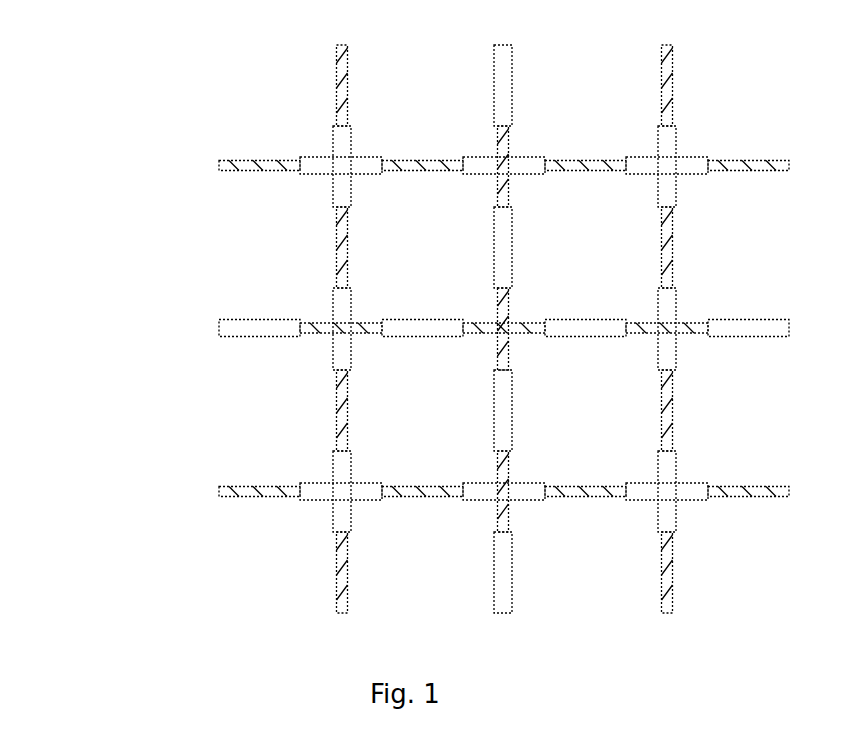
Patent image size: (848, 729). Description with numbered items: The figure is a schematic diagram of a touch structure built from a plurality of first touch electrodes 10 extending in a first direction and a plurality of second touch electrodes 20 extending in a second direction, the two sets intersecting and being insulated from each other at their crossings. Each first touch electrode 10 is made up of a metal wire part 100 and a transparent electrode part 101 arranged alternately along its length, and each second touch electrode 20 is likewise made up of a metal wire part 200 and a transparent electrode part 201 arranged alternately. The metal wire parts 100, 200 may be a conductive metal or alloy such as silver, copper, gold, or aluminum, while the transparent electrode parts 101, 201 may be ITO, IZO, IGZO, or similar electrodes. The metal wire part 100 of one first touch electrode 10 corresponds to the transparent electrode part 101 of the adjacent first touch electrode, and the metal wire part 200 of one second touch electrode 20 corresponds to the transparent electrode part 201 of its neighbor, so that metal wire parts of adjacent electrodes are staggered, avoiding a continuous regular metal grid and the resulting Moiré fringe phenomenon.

The first touch electrode 10 is at (117, 8).
The metal wire part 100 is at (338, 98).
The transparent electrode part 101 is at (339, 147).
The second touch electrode 20 is at (58, 218).
The metal wire part 200 is at (238, 166).
The transparent electrode part 201 is at (315, 165).